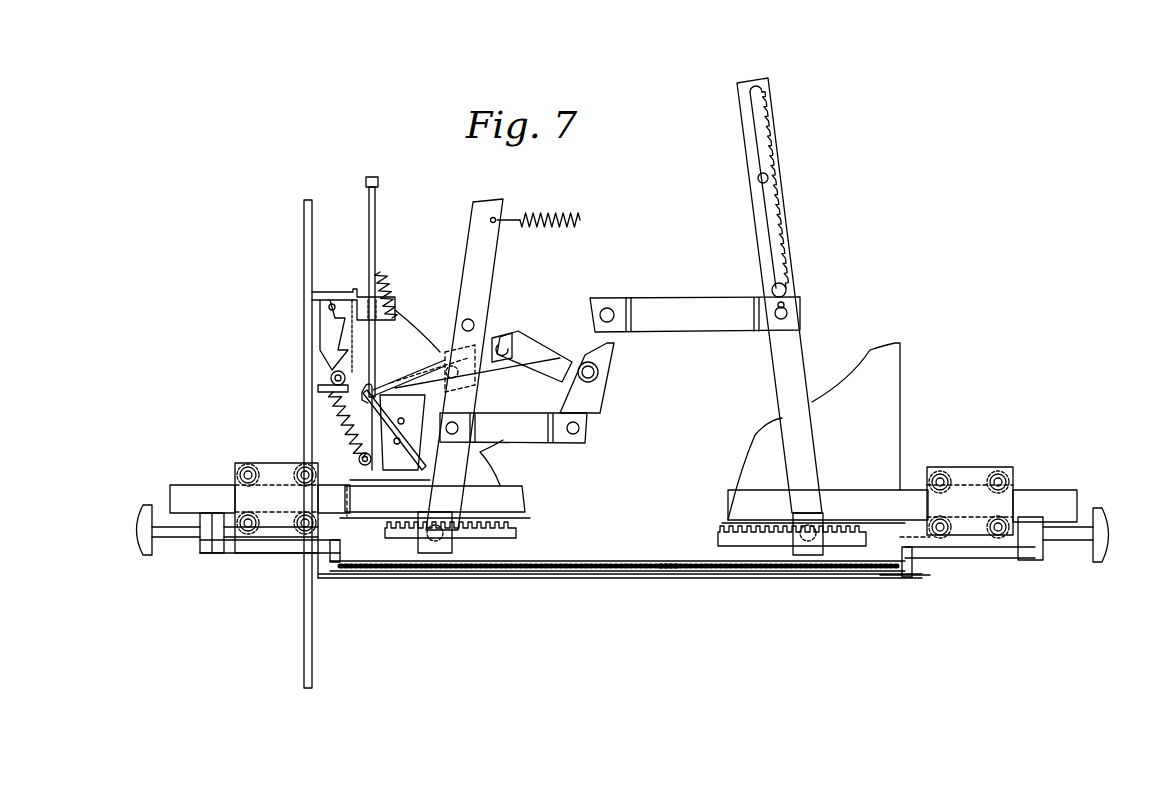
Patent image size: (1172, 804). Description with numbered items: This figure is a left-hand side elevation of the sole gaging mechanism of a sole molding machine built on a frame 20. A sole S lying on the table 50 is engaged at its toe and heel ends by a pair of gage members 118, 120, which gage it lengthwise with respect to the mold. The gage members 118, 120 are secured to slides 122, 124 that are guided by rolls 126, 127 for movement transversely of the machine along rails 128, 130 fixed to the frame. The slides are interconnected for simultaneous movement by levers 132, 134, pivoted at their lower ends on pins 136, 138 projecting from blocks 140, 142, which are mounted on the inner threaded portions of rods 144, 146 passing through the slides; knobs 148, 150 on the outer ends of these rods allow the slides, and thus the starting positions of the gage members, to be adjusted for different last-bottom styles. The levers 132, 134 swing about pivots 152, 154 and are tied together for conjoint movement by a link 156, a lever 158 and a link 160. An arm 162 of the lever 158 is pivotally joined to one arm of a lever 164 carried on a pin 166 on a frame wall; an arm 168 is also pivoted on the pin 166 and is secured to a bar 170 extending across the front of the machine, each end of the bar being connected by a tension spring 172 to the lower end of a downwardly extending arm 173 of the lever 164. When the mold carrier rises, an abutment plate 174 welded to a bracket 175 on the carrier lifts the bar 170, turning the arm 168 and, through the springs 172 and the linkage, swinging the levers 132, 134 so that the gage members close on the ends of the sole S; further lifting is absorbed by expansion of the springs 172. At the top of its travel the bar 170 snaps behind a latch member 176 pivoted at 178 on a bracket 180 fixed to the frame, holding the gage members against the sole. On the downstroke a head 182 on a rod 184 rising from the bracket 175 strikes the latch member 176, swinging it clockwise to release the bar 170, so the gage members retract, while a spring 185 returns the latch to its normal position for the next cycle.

The frame 20 is at (306, 228).
The table 50 is at (620, 580).
The sole S is at (668, 580).
The gage member 118 is at (335, 560).
The gage member 120 is at (915, 562).
The slide 122 is at (270, 548).
The slide 124 is at (995, 560).
The rolls 126 is at (300, 468).
The rolls 127 is at (990, 475).
The rail 128 is at (500, 503).
The rail 130 is at (760, 495).
The lever 132 is at (487, 270).
The lever 134 is at (752, 142).
The pin 136 is at (455, 553).
The pin 138 is at (800, 530).
The block 140 is at (433, 558).
The block 142 is at (812, 556).
The rod 144 is at (363, 535).
The rod 146 is at (882, 547).
The knob 148 is at (143, 540).
The knob 150 is at (1108, 528).
The pivot 152 is at (478, 322).
The pivot 154 is at (759, 178).
The link 156 is at (530, 443).
The lever 158 is at (590, 397).
The link 160 is at (700, 332).
The arm 162 is at (556, 355).
The lever 164 is at (498, 348).
The pin 166 is at (478, 382).
The arm 168 is at (330, 378).
The bar 170 is at (318, 386).
The tension spring 172 is at (345, 404).
The arm 173 is at (412, 435).
The abutment plate 174 is at (343, 393).
The bracket 175 is at (372, 385).
The latch member 176 is at (325, 340).
The pivot 178 is at (330, 307).
The bracket 180 is at (328, 293).
The head 182 is at (428, 165).
The rod 184 is at (428, 212).
The spring 185 is at (425, 255).